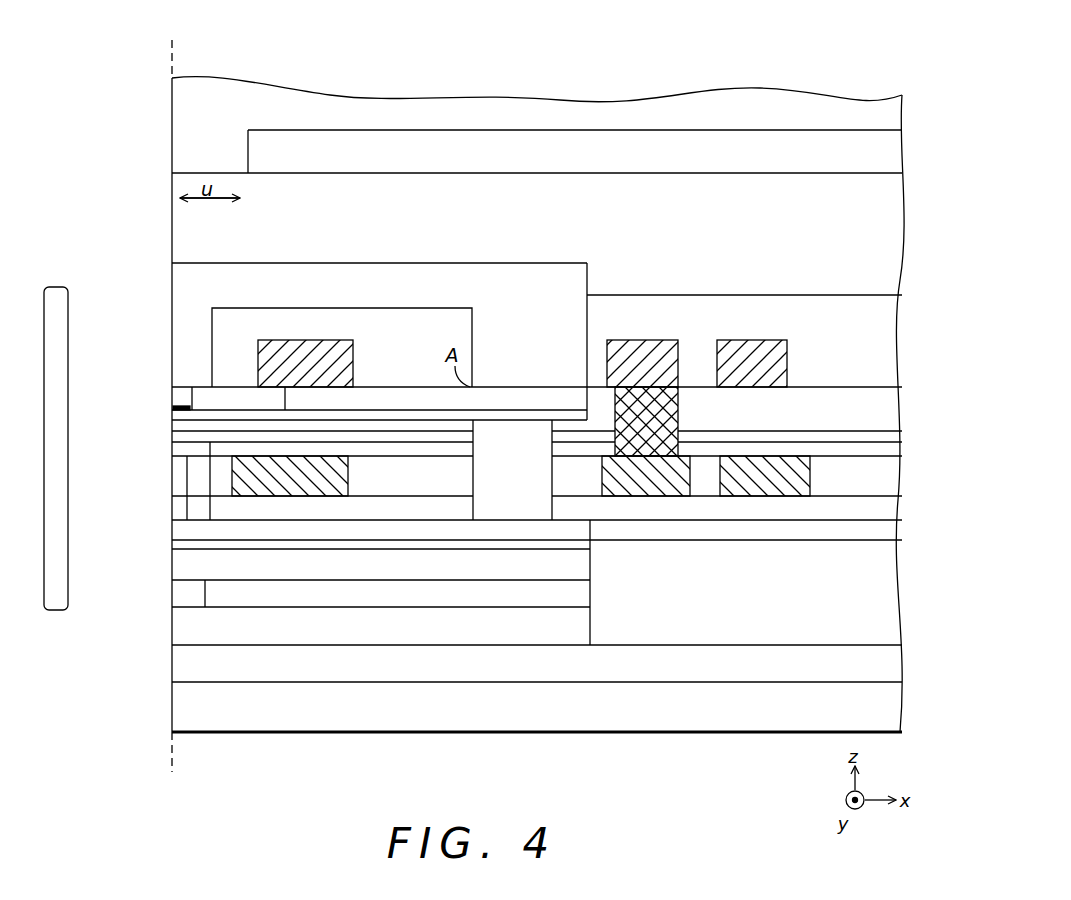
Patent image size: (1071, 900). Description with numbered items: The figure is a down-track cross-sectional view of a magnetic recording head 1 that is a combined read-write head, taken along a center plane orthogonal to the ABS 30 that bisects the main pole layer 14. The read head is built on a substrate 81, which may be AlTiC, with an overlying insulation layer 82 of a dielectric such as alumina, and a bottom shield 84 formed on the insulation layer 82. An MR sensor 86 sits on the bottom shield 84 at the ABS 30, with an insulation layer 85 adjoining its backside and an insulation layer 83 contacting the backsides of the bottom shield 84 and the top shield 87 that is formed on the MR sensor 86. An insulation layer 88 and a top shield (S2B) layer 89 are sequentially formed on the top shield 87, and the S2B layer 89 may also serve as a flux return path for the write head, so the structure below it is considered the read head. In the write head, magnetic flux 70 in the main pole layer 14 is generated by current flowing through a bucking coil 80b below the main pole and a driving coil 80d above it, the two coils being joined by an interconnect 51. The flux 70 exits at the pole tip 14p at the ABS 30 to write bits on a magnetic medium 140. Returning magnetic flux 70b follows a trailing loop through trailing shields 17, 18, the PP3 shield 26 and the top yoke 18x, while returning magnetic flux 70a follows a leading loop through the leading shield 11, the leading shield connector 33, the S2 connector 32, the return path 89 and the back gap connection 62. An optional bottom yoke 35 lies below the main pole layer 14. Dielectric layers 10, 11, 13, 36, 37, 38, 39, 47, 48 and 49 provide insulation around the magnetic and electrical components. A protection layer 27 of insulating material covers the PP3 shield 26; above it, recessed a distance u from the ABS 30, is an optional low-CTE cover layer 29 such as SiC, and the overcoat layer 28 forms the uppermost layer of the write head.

The magnetic recording head 1 is at (91, 146).
The dielectric layer 10 is at (176, 503).
The leading shield 11 is at (181, 436).
The dielectric layer 13 is at (181, 425).
The main pole layer 14 is at (547, 414).
The pole tip 14p is at (181, 412).
The trailing shield 17 is at (186, 401).
The trailing shield 18 is at (203, 397).
The top yoke 18x is at (523, 404).
The PP3 shield 26 is at (180, 285).
The protection layer 27 is at (182, 235).
The overcoat layer 28 is at (180, 128).
The cover layer 29 is at (885, 148).
The ABS 30 is at (170, 43).
The S2 connector 32 is at (232, 466).
The leading shield connector 33 is at (181, 450).
The bottom yoke 35 is at (407, 428).
The dielectric layer 36 is at (168, 523).
The dielectric layer 37 is at (885, 480).
The dielectric layer 38 is at (885, 448).
The dielectric layer 39 is at (885, 436).
The dielectric layer 47 is at (225, 388).
The dielectric layer 48 is at (230, 338).
The dielectric layer 49 is at (222, 360).
The interconnect 51 is at (673, 398).
The back gap connection 62 is at (525, 508).
The magnetic flux 70 is at (275, 417).
The magnetic flux 70a is at (198, 506).
The magnetic flux 70b is at (110, 387).
The bucking coil 80b is at (257, 496).
The driving coil 80d is at (290, 346).
The substrate 81 is at (188, 707).
The insulation layer 82 is at (188, 662).
The insulation layer 83 is at (885, 563).
The bottom shield 84 is at (188, 622).
The insulation layer 85 is at (563, 597).
The MR sensor 86 is at (188, 595).
The top shield 87 is at (176, 567).
The insulation layer 88 is at (176, 549).
The top shield (S2B) layer 89 is at (176, 540).
The magnetic medium 140 is at (56, 594).